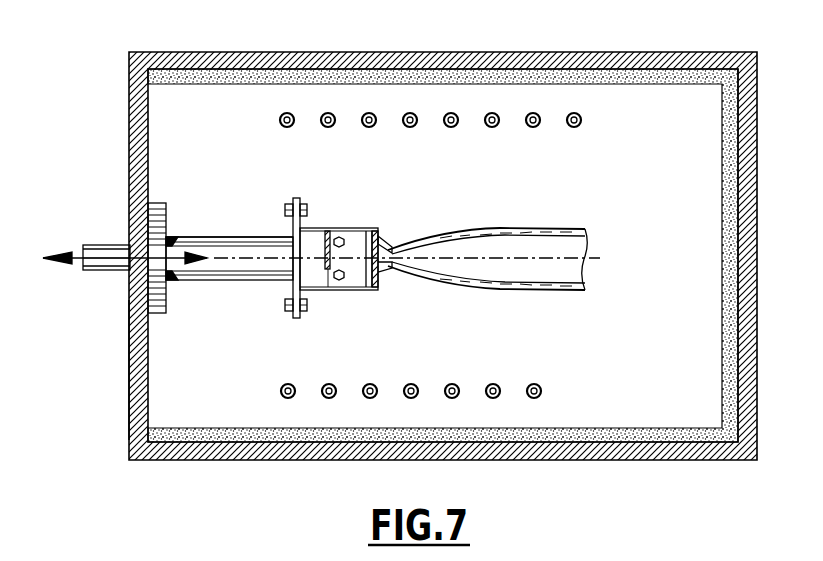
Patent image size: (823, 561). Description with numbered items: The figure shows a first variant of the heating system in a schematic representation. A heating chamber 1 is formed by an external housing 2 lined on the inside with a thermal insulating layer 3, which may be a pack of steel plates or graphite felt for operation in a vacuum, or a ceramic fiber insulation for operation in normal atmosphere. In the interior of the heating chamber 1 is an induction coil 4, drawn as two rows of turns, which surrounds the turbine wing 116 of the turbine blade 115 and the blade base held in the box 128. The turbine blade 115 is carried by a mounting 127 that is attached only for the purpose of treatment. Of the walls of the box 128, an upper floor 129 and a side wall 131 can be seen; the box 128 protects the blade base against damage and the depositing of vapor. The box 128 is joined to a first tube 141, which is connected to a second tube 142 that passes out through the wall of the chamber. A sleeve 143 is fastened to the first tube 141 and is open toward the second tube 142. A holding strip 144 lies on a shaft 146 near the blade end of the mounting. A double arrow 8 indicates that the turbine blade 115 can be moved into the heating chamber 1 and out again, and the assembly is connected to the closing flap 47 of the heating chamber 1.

The heating chamber 1 is at (100, 96).
The external housing 2 is at (652, 56).
The thermal insulating layer 3 is at (722, 250).
The induction coil 4 is at (542, 391).
The double arrow 8 is at (103, 248).
The closing flap 47 is at (129, 371).
The turbine blade 115 is at (531, 226).
The turbine wing 116 is at (467, 228).
The mounting 127 is at (238, 216).
The box 128 is at (316, 223).
The upper floor 129 is at (330, 228).
The side wall 131 is at (362, 278).
The first tube 141 is at (231, 272).
The second tube 142 is at (108, 268).
The sleeve 143 is at (153, 203).
The holding strip 144 is at (385, 238).
The shaft 146 is at (400, 275).